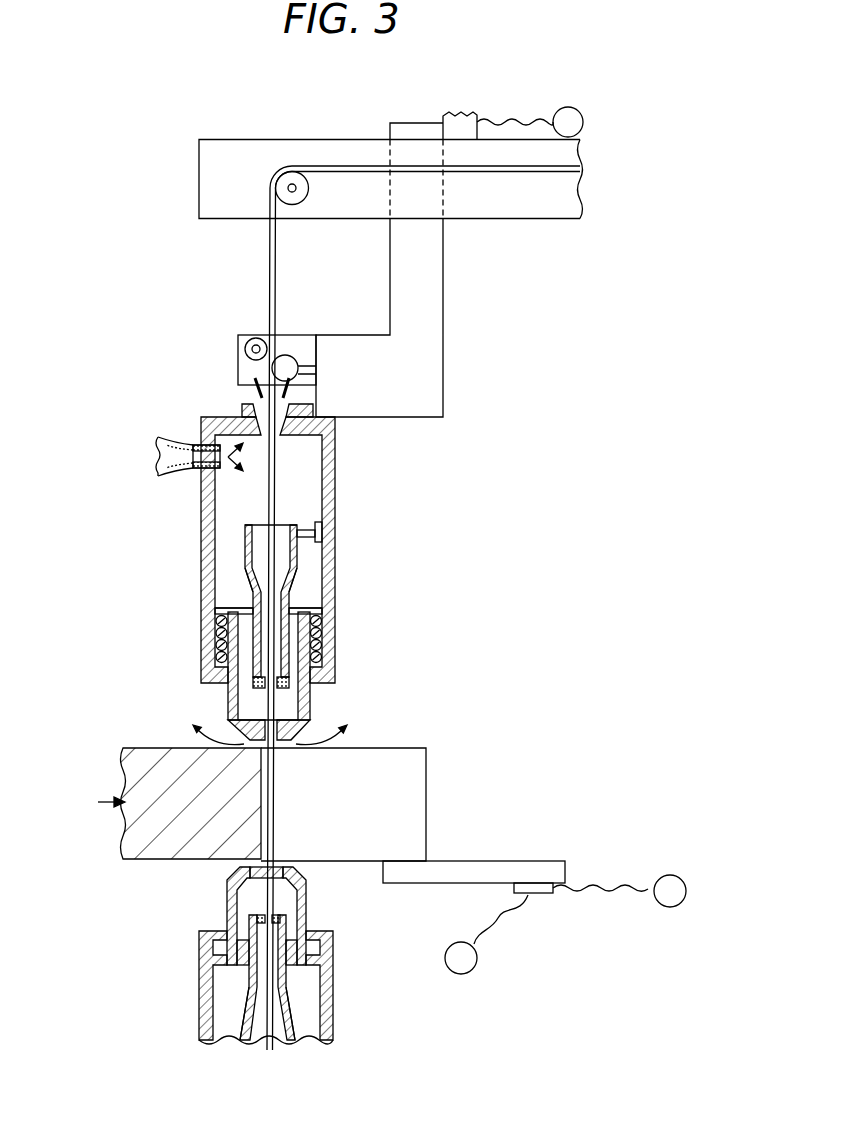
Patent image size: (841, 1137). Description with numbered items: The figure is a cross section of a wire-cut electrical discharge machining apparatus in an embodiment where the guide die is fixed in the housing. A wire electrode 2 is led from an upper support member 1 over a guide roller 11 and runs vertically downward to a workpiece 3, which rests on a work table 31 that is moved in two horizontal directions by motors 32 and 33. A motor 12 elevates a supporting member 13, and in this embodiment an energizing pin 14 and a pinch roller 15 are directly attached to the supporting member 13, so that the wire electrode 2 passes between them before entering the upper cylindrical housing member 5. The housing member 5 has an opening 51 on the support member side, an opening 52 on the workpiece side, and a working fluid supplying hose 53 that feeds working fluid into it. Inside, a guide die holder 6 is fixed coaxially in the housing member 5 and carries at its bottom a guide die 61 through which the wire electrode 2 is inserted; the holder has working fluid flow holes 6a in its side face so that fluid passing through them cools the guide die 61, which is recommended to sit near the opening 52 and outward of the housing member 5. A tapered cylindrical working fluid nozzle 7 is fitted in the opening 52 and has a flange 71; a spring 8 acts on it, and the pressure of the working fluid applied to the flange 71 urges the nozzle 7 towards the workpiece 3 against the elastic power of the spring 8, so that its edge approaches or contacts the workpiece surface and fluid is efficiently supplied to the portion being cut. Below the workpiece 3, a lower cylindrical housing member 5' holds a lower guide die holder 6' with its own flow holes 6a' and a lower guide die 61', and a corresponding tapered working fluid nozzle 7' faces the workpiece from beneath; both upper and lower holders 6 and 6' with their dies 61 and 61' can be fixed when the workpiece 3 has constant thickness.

The upper support member 1 is at (233, 205).
The wire electrode 2 is at (268, 300).
The workpiece 3 is at (418, 775).
The cylindrical housing member 5 is at (240, 550).
The cylindrical housing member 5' is at (246, 987).
The guide die holder 6 is at (283, 574).
The guide die holder 6' is at (281, 998).
The working fluid flow holes 6a is at (270, 591).
The working fluid flow holes 6a' is at (268, 1013).
The working fluid nozzle 7 is at (277, 726).
The working fluid nozzle 7' is at (244, 916).
The spring 8 is at (314, 637).
The guide roller 11 is at (298, 205).
The motor 12 is at (583, 122).
The supporting member 13 is at (390, 280).
The energizing pin 14 is at (288, 355).
The pinch roller 15 is at (245, 347).
The work table 31 is at (533, 865).
The motor 32 is at (477, 960).
The motor 33 is at (672, 907).
The opening 51 is at (250, 414).
The opening 52 is at (237, 697).
The working fluid supplying hose 53 is at (175, 435).
The guide die 61 is at (301, 696).
The guide die 61' is at (314, 901).
The flange 71 is at (293, 608).